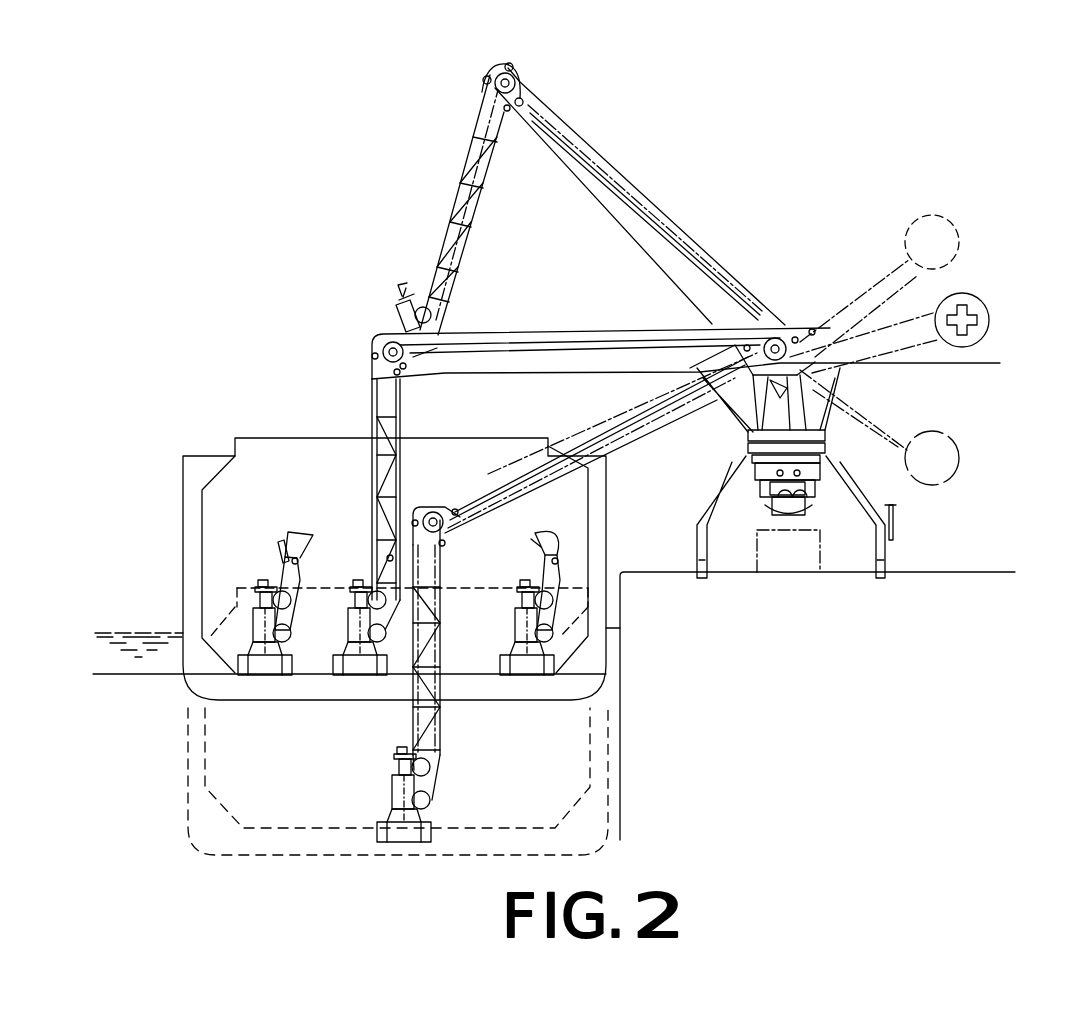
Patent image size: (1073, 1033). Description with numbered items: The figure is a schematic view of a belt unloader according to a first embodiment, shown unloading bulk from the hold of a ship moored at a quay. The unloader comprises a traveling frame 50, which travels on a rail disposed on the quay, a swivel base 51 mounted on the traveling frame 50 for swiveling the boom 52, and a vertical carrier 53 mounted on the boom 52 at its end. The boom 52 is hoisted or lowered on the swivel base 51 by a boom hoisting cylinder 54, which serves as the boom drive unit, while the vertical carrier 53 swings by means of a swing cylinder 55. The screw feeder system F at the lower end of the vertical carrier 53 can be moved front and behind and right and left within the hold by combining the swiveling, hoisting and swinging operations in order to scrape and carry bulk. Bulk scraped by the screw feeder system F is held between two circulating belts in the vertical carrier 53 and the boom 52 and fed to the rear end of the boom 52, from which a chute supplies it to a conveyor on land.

The traveling frame 50 is at (867, 492).
The swivel base 51 is at (820, 410).
The boom 52 is at (543, 362).
The vertical carrier 53 is at (372, 428).
The boom hoisting cylinder 54 is at (745, 385).
The swing cylinder 55 is at (415, 367).
The screw feeder system F is at (352, 627).